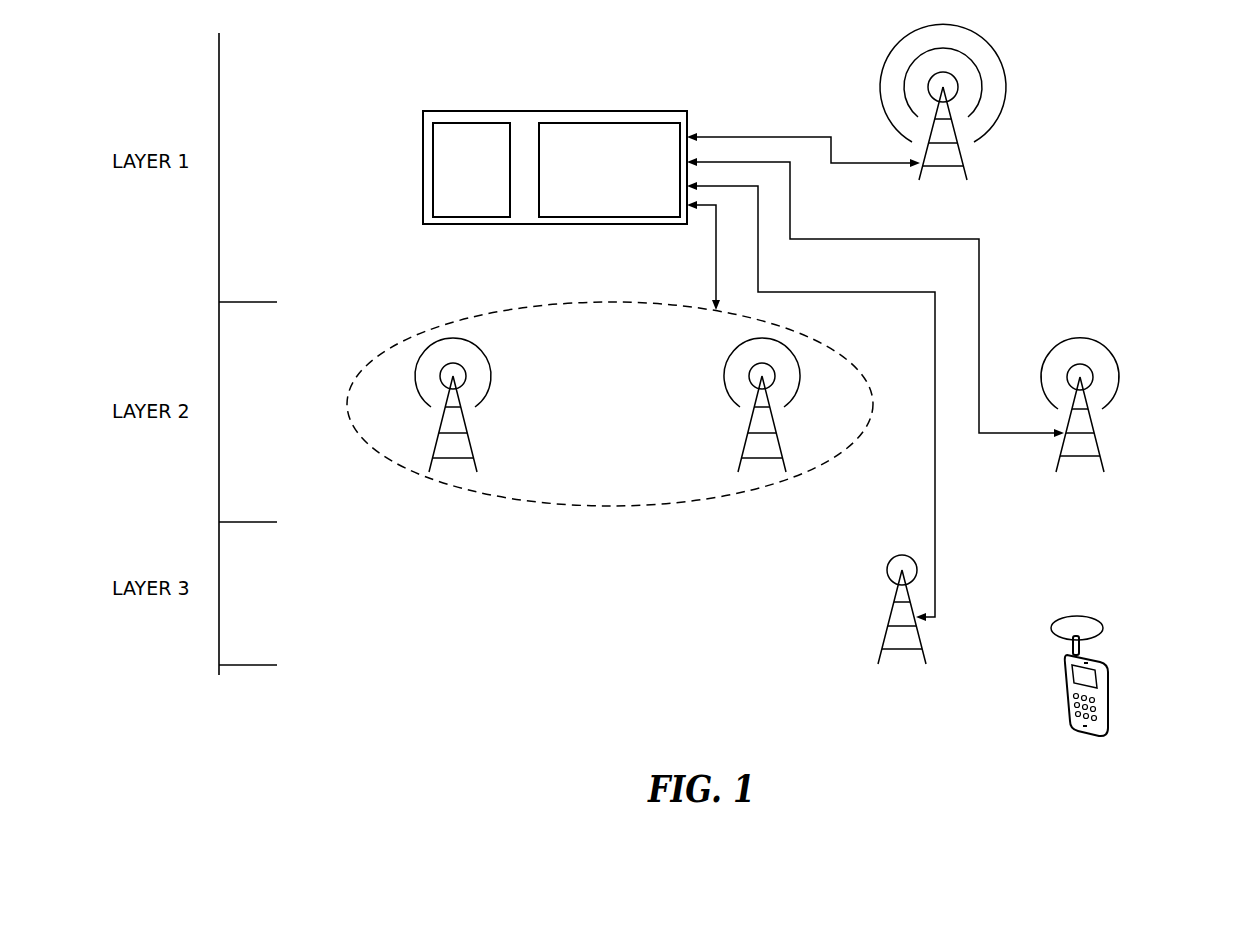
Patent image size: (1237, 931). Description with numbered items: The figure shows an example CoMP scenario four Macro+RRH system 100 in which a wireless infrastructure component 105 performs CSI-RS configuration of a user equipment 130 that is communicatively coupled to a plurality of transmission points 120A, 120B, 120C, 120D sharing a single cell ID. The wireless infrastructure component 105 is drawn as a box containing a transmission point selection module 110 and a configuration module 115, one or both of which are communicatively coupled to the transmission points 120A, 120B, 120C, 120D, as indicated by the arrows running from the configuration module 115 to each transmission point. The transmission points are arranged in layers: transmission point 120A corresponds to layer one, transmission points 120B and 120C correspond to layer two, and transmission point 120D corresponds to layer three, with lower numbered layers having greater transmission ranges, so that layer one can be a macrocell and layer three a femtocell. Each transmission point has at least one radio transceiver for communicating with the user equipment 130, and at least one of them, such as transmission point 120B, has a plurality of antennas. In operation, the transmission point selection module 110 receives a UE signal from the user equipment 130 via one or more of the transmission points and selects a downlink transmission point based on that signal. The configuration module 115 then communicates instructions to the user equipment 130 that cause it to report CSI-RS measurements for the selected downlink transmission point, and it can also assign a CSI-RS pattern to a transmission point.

The CoMP scenario four Macro+RRH system 100 is at (1166, 49).
The wireless infrastructure component 105 is at (427, 112).
The transmission point selection module 110 is at (435, 150).
The configuration module 115 is at (688, 131).
The transmission point 120A is at (963, 163).
The transmission point 120B is at (485, 315).
The transmission point 120C is at (1095, 428).
The transmission point 120D is at (888, 627).
The user equipment 130 is at (1113, 668).